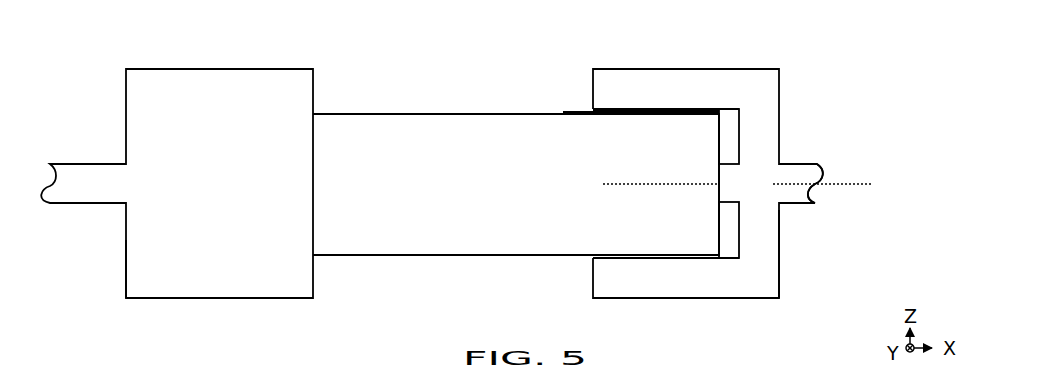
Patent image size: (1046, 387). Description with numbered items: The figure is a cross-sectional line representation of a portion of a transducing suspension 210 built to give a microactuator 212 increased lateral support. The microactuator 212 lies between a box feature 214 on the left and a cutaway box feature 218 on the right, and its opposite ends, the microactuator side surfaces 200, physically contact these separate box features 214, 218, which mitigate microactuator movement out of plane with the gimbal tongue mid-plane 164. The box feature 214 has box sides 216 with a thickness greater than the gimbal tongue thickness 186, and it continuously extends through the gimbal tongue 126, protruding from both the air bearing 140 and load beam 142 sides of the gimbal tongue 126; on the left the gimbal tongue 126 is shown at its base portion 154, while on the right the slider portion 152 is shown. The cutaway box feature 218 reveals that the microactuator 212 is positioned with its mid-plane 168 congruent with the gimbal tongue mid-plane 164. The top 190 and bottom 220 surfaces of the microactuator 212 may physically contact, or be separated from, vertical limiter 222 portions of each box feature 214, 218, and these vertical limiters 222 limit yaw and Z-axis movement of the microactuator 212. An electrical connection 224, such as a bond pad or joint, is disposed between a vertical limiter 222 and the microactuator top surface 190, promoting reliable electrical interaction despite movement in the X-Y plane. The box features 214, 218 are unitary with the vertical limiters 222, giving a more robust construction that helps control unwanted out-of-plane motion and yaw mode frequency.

The transducing suspension 210 is at (477, 172).
The box feature 214 is at (175, 96).
The microactuator 212 is at (358, 246).
The box sides 216 is at (129, 268).
The cutaway box feature 218 is at (591, 67).
The vertical limiter 222 is at (214, 67).
The bottom surface 220 is at (434, 257).
The top surface 190 is at (425, 112).
The electrical connection 224 is at (572, 112).
The microactuator side surfaces 200 is at (565, 257).
The mid-plane 168 is at (609, 184).
The base portion 154 is at (99, 196).
The gimbal tongue thickness 186 is at (110, 140).
The load beam side 142 is at (802, 163).
The air bearing side 140 is at (807, 207).
The slider portion 152 is at (823, 170).
The gimbal tongue mid-plane 164 is at (873, 184).
The gimbal tongue 126 is at (805, 259).